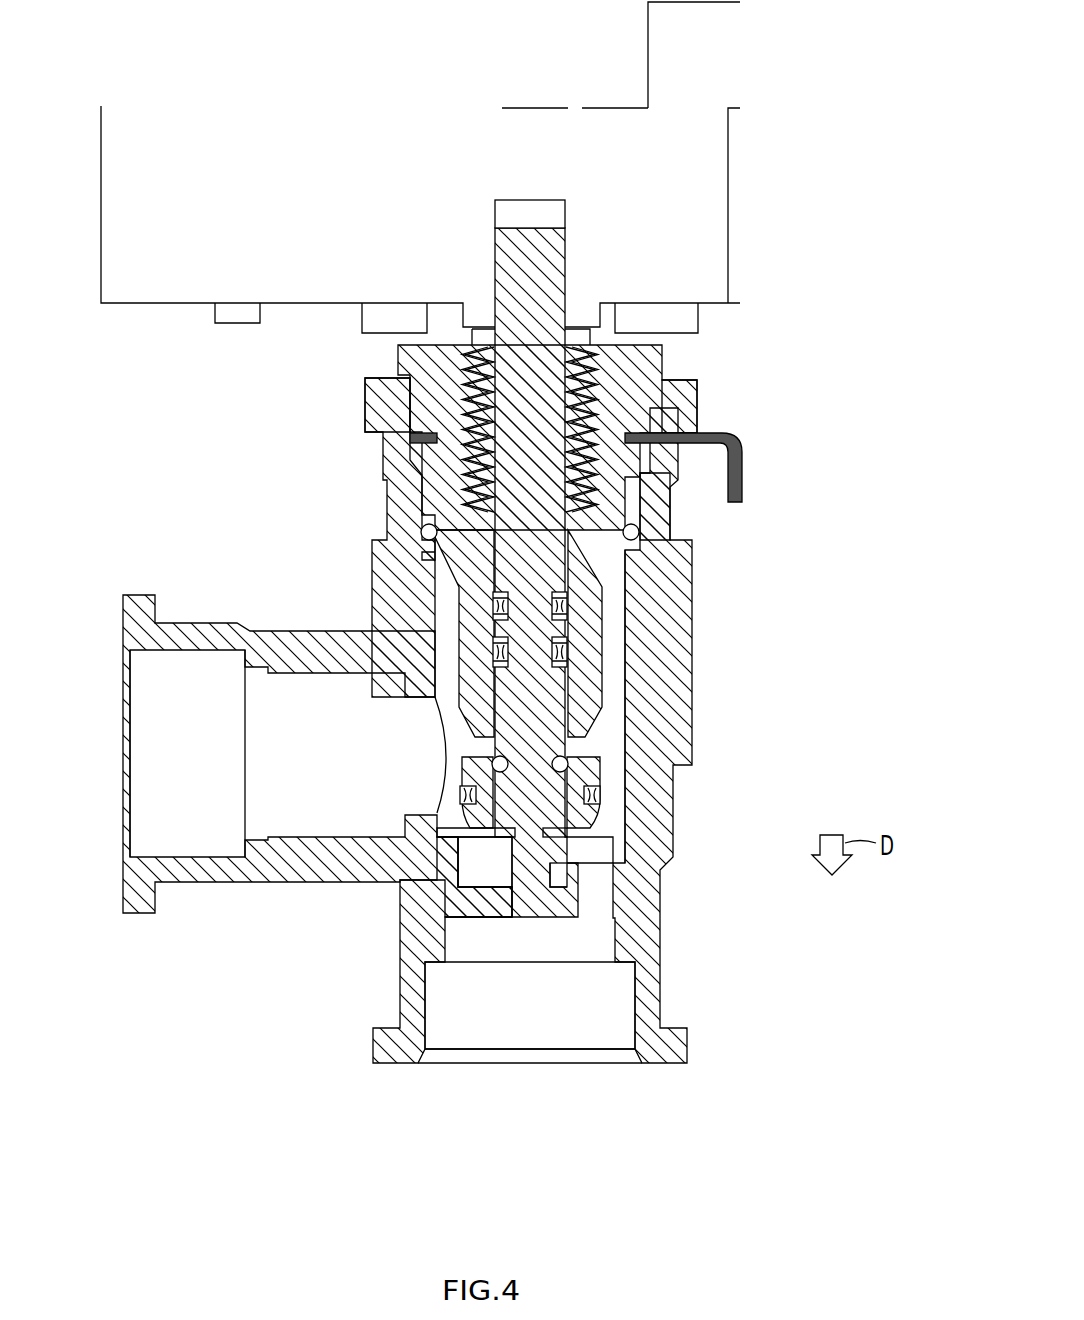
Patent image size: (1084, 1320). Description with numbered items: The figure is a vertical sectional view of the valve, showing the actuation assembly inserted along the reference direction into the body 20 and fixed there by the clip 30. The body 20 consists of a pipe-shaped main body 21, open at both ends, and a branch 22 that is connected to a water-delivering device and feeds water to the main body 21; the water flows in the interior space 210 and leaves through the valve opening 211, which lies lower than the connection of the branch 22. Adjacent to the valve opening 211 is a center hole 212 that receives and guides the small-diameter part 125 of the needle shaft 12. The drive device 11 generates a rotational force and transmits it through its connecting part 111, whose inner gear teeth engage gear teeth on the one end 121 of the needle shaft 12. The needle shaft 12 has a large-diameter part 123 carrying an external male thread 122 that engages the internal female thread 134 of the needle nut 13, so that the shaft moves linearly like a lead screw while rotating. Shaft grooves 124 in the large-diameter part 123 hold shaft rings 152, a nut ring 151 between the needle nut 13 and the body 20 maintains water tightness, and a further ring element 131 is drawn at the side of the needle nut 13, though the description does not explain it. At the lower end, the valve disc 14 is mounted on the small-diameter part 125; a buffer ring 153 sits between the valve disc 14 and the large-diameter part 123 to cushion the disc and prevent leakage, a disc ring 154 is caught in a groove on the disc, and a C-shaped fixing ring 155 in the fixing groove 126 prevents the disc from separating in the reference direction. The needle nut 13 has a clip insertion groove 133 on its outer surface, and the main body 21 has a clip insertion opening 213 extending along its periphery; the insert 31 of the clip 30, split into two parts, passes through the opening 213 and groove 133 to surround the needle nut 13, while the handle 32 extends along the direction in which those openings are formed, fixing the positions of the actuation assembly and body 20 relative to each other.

The drive device 11 is at (785, 88).
The needle shaft 12 is at (480, 608).
The needle nut 13 is at (676, 370).
The valve disc 14 is at (600, 817).
The body 20 is at (292, 906).
The main body 21 is at (470, 855).
The branch 22 is at (190, 888).
The clip 30 is at (737, 472).
The insert 31 is at (415, 438).
The handle 32 is at (745, 488).
The connecting part 111 is at (497, 212).
The one end of the needle shaft 121 is at (510, 258).
The external male thread 122 is at (478, 393).
The large-diameter part 123 is at (585, 682).
The shaft grooves 124 is at (562, 612).
The small-diameter part 125 is at (537, 898).
The fixing groove 126 is at (500, 905).
The o-ring 131 is at (487, 500).
The clip insertion groove 133 is at (655, 445).
The internal female thread 134 is at (487, 472).
The nut ring 151 is at (634, 532).
The shaft rings 152 is at (562, 652).
The buffer ring 153 is at (565, 765).
The disc ring 154 is at (596, 796).
The fixing ring 155 is at (562, 833).
The interior space 210 is at (612, 728).
The valve opening 211 is at (485, 878).
The center hole 212 is at (512, 900).
The clip insertion opening 213 is at (660, 415).